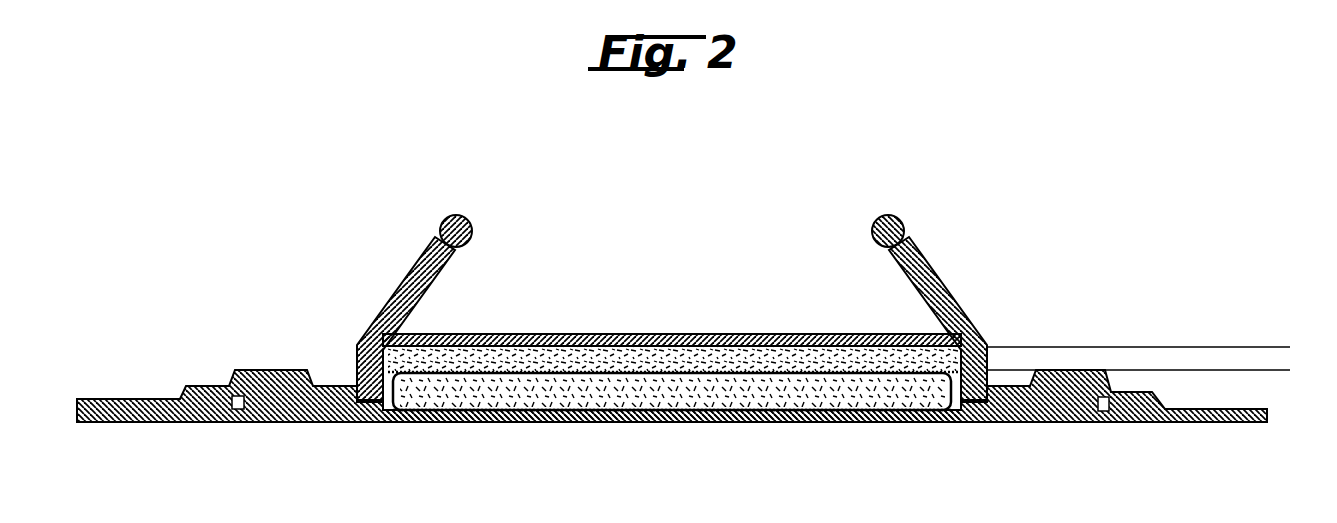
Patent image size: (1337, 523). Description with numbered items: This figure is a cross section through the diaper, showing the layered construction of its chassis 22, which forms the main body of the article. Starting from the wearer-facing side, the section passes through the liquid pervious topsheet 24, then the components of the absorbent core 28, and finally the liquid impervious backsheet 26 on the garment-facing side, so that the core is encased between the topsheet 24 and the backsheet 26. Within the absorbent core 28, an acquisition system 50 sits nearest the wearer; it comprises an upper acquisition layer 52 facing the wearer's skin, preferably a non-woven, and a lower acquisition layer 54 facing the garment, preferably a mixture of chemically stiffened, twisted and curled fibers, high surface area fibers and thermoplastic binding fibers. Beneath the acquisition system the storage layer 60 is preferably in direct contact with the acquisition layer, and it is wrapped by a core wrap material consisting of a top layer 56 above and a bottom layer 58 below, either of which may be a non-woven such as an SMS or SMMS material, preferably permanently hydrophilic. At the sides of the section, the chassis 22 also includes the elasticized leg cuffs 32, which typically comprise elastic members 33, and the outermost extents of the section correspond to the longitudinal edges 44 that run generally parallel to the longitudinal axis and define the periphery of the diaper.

The chassis 22 is at (666, 323).
The liquid pervious topsheet 24 is at (600, 334).
The liquid impervious backsheet 26 is at (672, 432).
The absorbent core 28 is at (1288, 371).
The elasticized leg cuffs 32 is at (386, 264).
The elastic members 33 is at (468, 216).
The longitudinal edges 44 is at (72, 428).
The acquisition system 50 is at (1288, 347).
The upper acquisition layer 52 is at (485, 334).
The lower acquisition layer 54 is at (855, 334).
The top layer 56 is at (485, 422).
The bottom layer 58 is at (705, 422).
The storage layer 60 is at (842, 422).